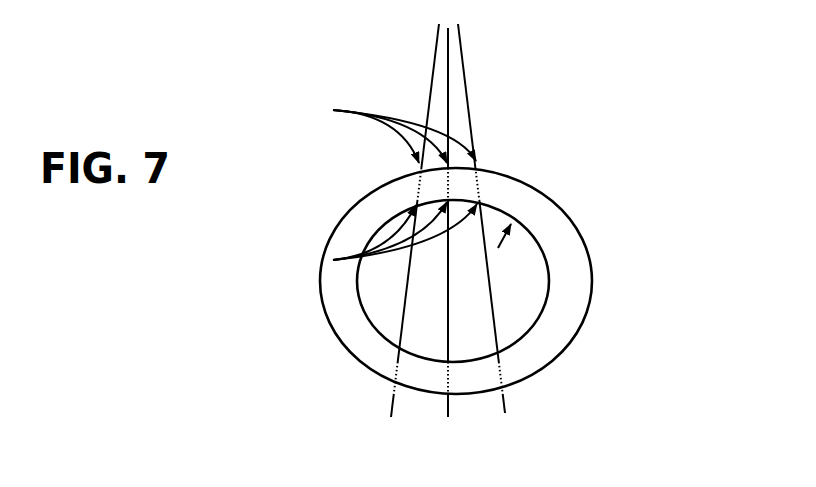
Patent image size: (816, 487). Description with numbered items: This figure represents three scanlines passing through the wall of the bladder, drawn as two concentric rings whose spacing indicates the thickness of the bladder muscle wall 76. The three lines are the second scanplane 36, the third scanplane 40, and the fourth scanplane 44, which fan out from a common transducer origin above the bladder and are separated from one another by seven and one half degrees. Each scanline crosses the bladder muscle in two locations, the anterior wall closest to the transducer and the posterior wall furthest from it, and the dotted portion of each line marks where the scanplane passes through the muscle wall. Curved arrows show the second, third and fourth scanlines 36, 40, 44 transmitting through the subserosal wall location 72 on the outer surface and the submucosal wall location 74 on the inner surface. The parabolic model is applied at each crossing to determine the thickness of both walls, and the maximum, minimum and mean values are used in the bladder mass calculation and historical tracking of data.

The second scanplane 36 is at (389, 394).
The third scanplane 40 is at (447, 418).
The fourth scanplane 44 is at (507, 411).
The subserosal wall location 72 is at (344, 131).
The submucosal wall location 74 is at (344, 259).
The thickness of the bladder muscle wall 76 is at (532, 180).